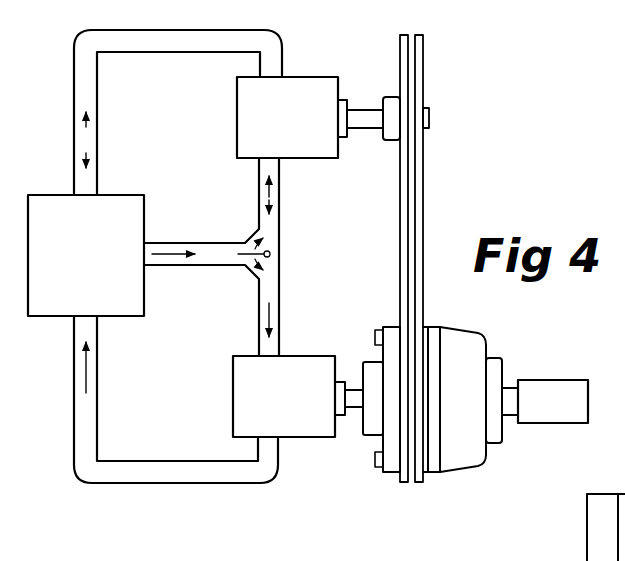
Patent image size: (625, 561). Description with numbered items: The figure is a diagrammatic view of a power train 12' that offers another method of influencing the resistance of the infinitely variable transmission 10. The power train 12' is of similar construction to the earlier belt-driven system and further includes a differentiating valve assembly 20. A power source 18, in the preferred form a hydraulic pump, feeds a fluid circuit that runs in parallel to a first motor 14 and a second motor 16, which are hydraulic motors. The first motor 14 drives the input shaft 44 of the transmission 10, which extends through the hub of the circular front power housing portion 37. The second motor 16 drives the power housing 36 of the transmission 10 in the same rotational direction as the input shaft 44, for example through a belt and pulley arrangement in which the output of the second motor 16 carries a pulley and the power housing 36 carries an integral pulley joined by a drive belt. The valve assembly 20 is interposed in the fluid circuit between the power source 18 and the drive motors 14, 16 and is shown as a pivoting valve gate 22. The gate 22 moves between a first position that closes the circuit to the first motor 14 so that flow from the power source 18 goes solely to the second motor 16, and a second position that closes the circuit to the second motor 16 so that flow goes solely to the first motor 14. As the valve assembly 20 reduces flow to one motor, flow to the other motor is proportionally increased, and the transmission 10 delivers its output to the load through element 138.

The infinitely variable transmission 10 is at (456, 377).
The power train 12' is at (445, 258).
The first motor 14 is at (233, 392).
The second motor 16 is at (315, 77).
The power source 18 is at (124, 195).
The differentiating valve assembly 20 is at (288, 253).
The pivoting valve gate 22 is at (246, 266).
The power housing 36 is at (463, 332).
The front power housing portion 37 is at (393, 327).
The input shaft 44 is at (345, 410).
The output shaft to load 138 is at (512, 380).